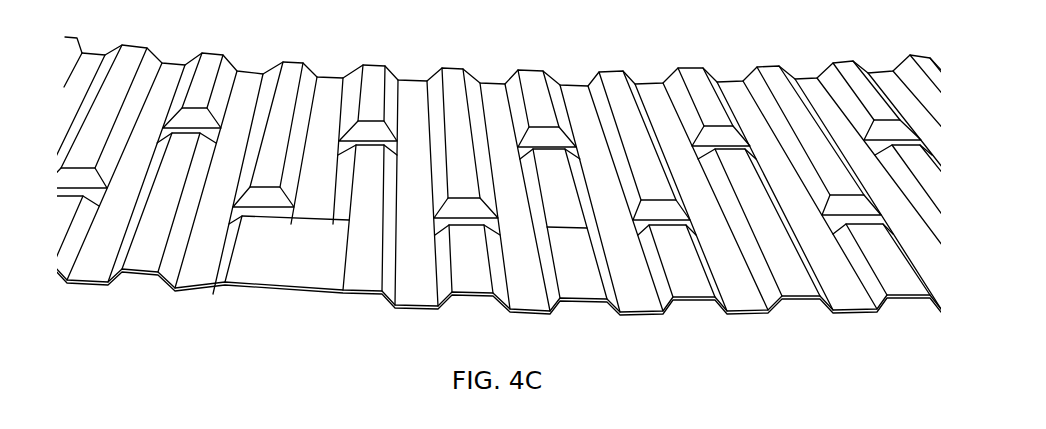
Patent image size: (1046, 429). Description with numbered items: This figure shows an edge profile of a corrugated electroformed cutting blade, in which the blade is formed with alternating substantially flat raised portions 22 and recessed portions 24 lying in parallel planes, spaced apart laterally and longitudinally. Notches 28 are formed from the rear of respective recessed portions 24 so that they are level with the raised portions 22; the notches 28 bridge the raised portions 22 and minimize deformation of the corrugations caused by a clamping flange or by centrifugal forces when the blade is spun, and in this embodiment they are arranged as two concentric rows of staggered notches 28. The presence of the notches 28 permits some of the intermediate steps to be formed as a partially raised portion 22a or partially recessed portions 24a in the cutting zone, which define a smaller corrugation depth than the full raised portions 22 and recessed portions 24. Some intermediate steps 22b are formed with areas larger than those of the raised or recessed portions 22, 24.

The raised portion 22 is at (367, 272).
The partially raised portion 22a is at (582, 287).
The intermediate step 22b is at (280, 275).
The recessed portion 24 is at (417, 293).
The partially recessed portion 24a is at (628, 288).
The notch 28 is at (383, 133).